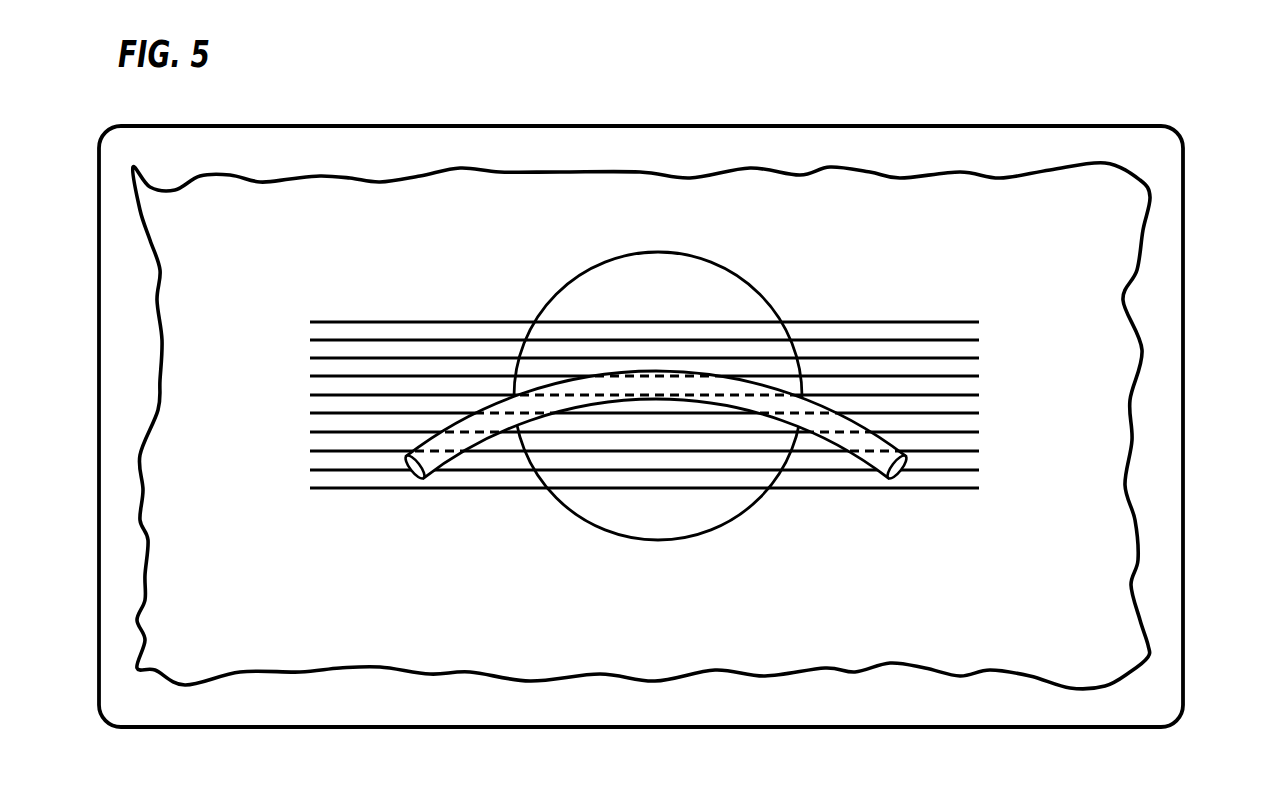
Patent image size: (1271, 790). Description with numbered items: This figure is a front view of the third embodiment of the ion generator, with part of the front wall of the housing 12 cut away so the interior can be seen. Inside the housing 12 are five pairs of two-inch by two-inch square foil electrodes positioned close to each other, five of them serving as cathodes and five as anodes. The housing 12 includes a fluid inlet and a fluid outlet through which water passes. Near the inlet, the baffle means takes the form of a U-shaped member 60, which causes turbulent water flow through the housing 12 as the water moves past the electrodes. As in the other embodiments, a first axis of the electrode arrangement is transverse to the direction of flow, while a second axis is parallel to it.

The housing 12 is at (1183, 446).
The U-shaped member 60 is at (432, 472).